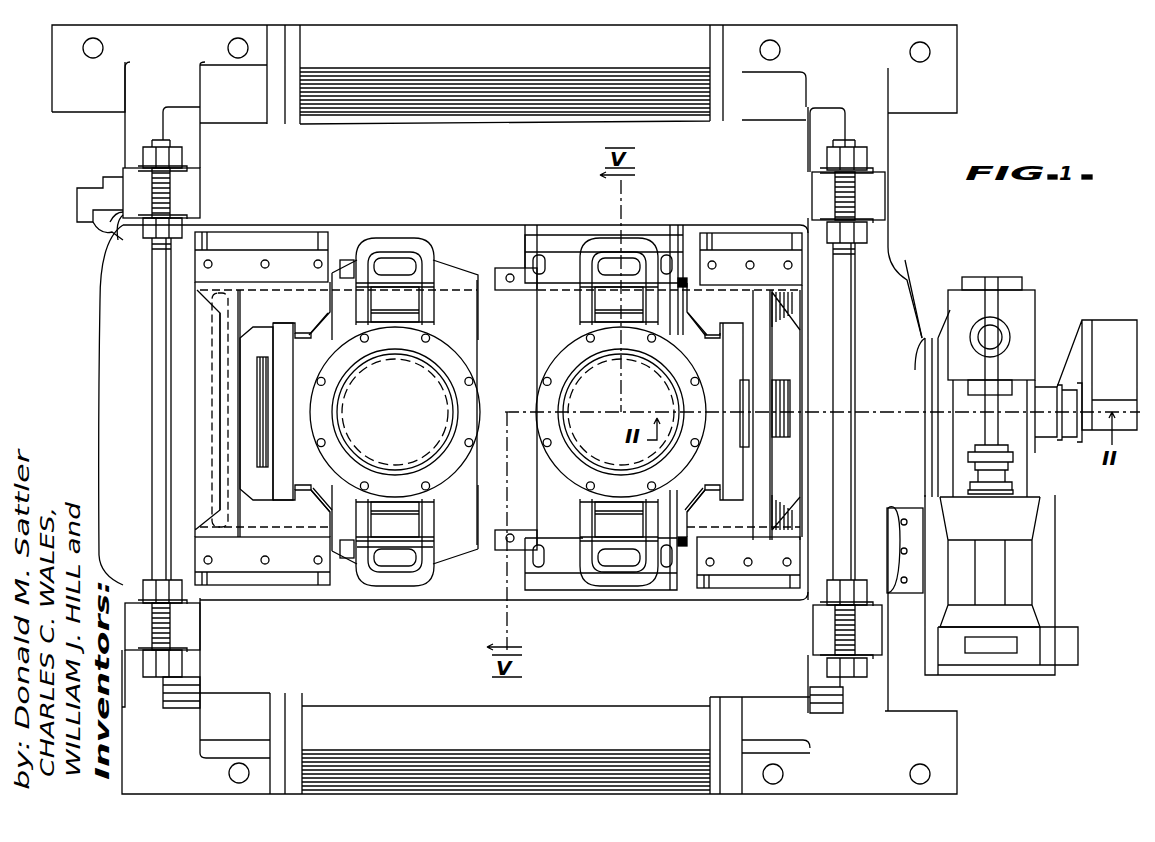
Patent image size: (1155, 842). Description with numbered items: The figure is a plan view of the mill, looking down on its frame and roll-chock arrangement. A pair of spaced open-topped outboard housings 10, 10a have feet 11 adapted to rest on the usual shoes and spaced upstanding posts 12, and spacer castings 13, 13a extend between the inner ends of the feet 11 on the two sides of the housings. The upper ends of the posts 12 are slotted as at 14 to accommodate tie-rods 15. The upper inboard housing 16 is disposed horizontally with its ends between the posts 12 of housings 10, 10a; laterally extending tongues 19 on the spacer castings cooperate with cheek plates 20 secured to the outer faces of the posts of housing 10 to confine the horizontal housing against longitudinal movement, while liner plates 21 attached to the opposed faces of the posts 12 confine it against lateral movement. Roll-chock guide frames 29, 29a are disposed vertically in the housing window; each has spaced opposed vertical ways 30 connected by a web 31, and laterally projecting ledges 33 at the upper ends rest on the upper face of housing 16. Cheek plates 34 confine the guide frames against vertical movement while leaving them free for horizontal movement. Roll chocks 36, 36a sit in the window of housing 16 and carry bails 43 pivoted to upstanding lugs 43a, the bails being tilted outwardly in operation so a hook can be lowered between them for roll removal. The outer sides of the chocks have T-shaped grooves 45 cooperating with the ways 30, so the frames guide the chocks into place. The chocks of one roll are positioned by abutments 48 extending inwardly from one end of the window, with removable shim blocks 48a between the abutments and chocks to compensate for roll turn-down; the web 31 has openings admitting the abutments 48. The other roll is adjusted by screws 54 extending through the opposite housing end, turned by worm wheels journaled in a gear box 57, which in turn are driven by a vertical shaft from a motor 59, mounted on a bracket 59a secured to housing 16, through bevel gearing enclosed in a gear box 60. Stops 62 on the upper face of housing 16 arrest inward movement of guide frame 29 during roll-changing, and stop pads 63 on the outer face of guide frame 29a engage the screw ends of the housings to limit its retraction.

The outboard housing 10 is at (116, 135).
The outboard housing 10a is at (896, 148).
The feet 11 is at (52, 60).
The upstanding posts 12 is at (192, 175).
The spacer casting 13 is at (497, 100).
The spacer casting 13a is at (575, 720).
The slots 14 is at (172, 198).
The tie-rods 15 is at (152, 302).
The inboard housing 16 is at (100, 366).
The tongues 19 is at (98, 226).
The cheek plates 20 is at (77, 198).
The liner plates 21 is at (120, 222).
The roll-chock guide frame 29 is at (280, 300).
The roll-chock guide frame 29a is at (738, 300).
The vertical ways 30 is at (308, 325).
The web 31 is at (226, 366).
The ledges 33 is at (690, 275).
The cheek plates 34 is at (248, 262).
The roll chock 36 is at (292, 404).
The roll chock 36a is at (728, 455).
The bails 43 is at (400, 245).
The lugs 43a is at (402, 284).
The T-shaped grooves 45 is at (302, 340).
The abutments 48 is at (250, 403).
The shim blocks 48a is at (264, 434).
The screws 54 is at (790, 405).
The gear box 57 is at (940, 337).
The motor 59 is at (1005, 549).
The bracket 59a is at (1055, 591).
The gear box 60 is at (1035, 292).
The stops 62 is at (347, 262).
The stop pads 63 is at (778, 350).